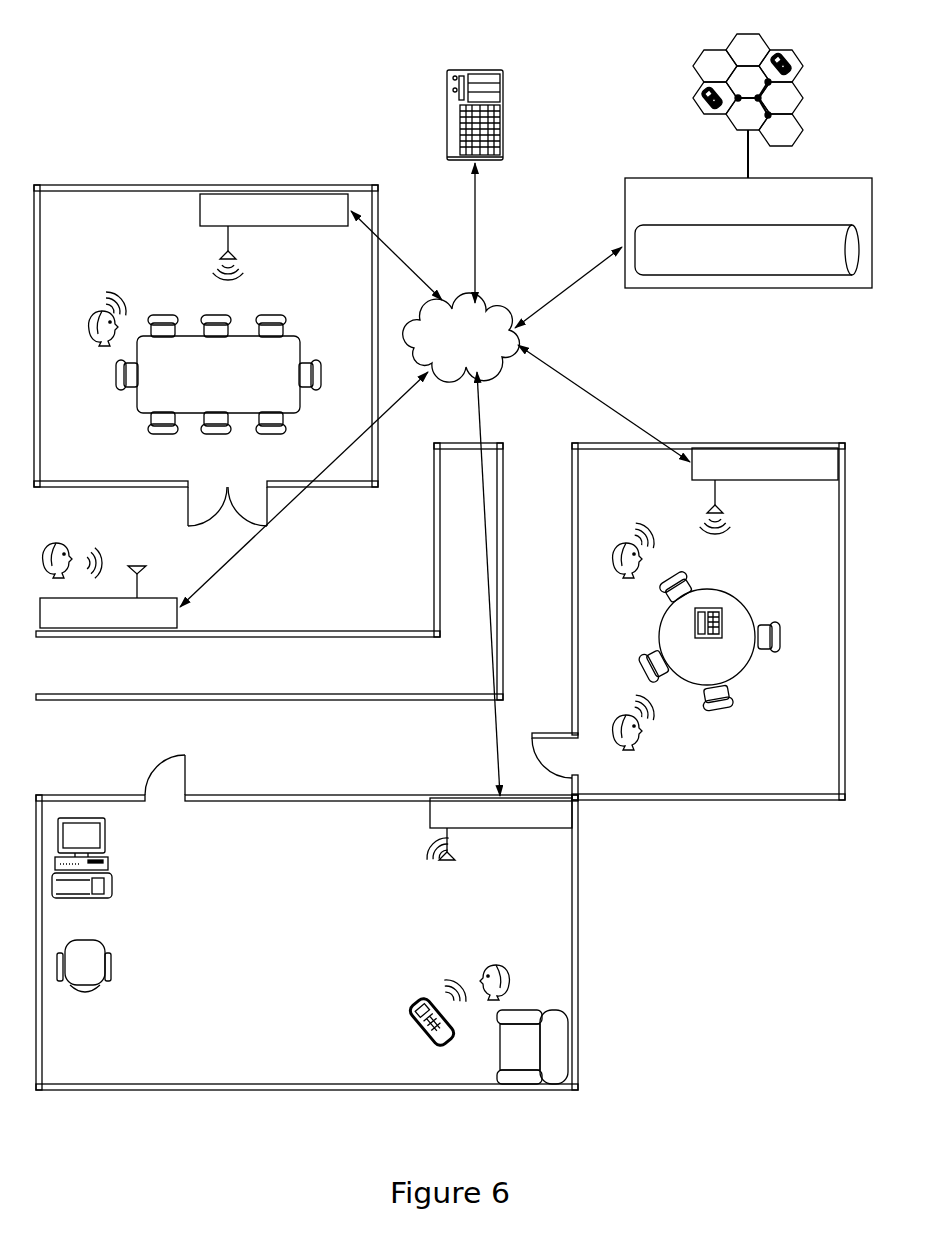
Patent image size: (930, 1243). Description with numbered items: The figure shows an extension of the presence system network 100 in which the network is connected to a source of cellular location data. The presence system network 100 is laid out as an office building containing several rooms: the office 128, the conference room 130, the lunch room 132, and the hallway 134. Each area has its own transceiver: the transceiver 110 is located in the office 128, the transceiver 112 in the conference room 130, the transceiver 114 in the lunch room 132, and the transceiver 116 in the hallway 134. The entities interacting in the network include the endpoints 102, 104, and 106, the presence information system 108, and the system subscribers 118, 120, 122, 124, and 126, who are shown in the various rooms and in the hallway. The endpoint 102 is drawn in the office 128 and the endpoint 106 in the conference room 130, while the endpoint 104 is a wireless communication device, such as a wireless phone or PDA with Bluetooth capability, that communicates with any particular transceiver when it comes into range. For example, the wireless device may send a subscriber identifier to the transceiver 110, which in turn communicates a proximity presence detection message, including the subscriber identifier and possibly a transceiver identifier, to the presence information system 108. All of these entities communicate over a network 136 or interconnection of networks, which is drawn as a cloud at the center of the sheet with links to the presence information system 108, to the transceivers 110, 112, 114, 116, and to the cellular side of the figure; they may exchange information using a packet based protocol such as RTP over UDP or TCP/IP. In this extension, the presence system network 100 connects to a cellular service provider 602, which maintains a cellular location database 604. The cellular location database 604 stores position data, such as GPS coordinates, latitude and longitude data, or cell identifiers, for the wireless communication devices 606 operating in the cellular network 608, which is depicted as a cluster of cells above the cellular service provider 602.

The presence system network 100 is at (120, 1148).
The endpoint 102 is at (115, 888).
The endpoint 104 is at (410, 1033).
The endpoint 106 is at (724, 618).
The presence information system 108 is at (447, 82).
The transceiver 110 is at (557, 823).
The transceiver 112 is at (827, 473).
The transceiver 114 is at (337, 219).
The transceiver 116 is at (160, 623).
The system subscriber 118 is at (510, 968).
The system subscriber 120 is at (612, 550).
The system subscriber 122 is at (612, 722).
The system subscriber 124 is at (97, 318).
The system subscriber 126 is at (73, 542).
The office 128 is at (80, 1073).
The conference room 130 is at (612, 473).
The lunch room 132 is at (78, 219).
The hallway 134 is at (422, 623).
The network 136 is at (493, 312).
The cellular service provider 602 is at (862, 208).
The cellular location database 604 is at (845, 259).
The wireless communication devices 606 is at (793, 64).
The cellular network 608 is at (818, 113).